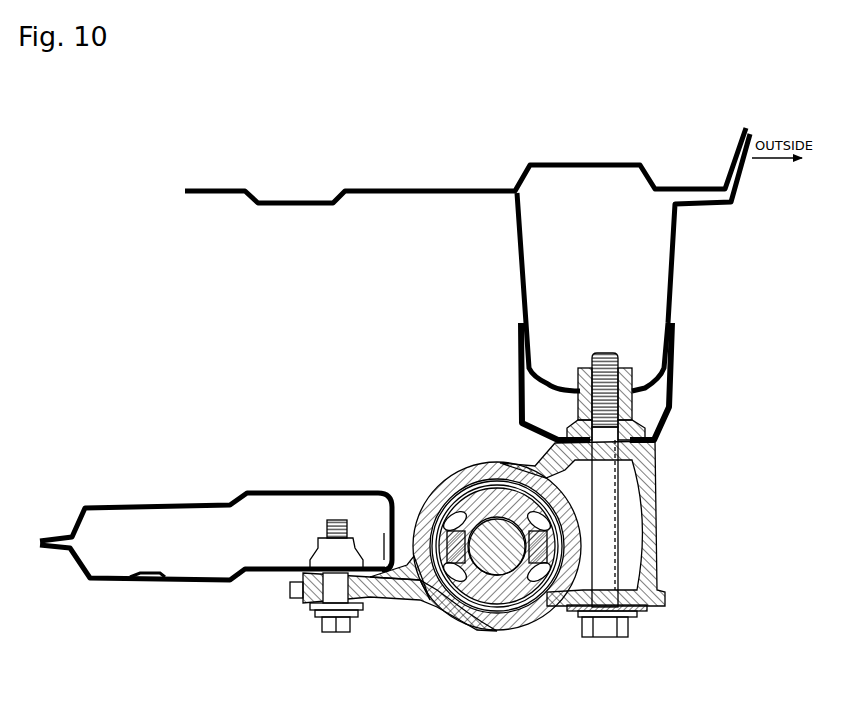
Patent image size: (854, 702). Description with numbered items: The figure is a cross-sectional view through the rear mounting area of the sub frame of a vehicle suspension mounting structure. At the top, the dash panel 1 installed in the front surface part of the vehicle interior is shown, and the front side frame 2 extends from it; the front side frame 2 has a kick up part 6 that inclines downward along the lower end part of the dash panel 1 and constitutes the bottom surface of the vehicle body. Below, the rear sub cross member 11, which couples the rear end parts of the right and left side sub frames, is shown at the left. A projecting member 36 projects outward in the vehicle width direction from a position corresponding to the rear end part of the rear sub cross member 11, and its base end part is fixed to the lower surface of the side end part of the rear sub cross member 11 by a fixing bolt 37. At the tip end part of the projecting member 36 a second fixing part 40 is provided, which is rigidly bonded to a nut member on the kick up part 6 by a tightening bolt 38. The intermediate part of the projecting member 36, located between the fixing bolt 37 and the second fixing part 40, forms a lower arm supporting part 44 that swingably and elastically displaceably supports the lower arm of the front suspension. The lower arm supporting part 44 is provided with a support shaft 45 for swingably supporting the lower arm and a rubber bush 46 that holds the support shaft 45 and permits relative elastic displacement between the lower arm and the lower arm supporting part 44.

The dash panel 1 is at (389, 188).
The front side frame 2 is at (678, 270).
The kick up part 6 is at (533, 380).
The rear sub cross member 11 is at (187, 583).
The projecting member 36 is at (537, 632).
The fixing bolt 37 is at (337, 633).
The tightening bolt 38 is at (613, 500).
The second fixing part 40 is at (657, 540).
The lower arm supporting part 44 is at (495, 475).
The support shaft 45 is at (447, 478).
The rubber bush 46 is at (490, 556).